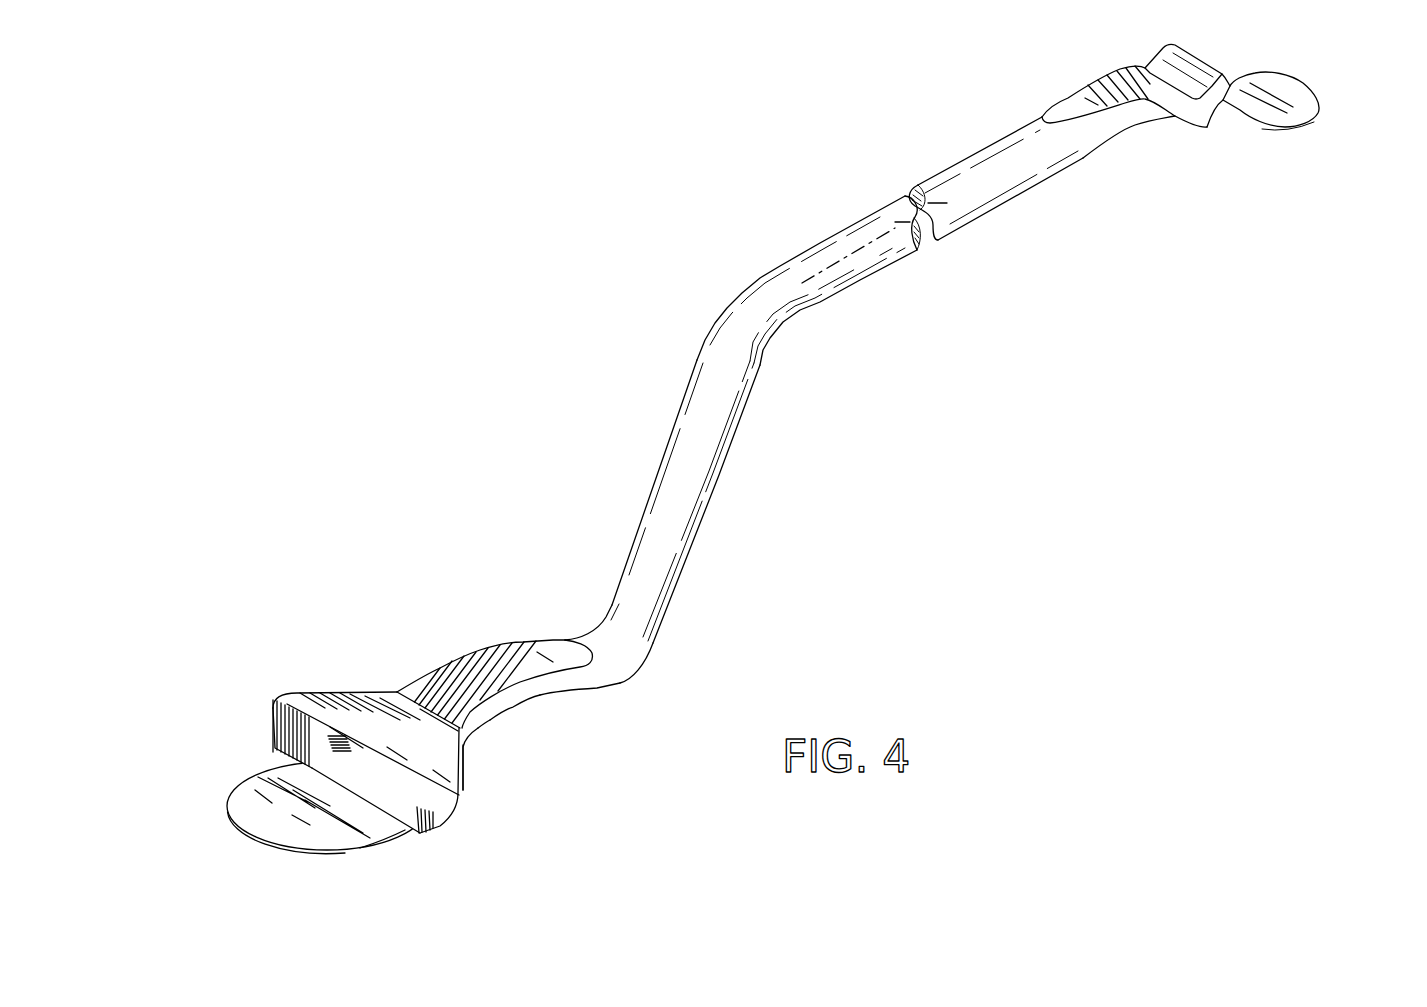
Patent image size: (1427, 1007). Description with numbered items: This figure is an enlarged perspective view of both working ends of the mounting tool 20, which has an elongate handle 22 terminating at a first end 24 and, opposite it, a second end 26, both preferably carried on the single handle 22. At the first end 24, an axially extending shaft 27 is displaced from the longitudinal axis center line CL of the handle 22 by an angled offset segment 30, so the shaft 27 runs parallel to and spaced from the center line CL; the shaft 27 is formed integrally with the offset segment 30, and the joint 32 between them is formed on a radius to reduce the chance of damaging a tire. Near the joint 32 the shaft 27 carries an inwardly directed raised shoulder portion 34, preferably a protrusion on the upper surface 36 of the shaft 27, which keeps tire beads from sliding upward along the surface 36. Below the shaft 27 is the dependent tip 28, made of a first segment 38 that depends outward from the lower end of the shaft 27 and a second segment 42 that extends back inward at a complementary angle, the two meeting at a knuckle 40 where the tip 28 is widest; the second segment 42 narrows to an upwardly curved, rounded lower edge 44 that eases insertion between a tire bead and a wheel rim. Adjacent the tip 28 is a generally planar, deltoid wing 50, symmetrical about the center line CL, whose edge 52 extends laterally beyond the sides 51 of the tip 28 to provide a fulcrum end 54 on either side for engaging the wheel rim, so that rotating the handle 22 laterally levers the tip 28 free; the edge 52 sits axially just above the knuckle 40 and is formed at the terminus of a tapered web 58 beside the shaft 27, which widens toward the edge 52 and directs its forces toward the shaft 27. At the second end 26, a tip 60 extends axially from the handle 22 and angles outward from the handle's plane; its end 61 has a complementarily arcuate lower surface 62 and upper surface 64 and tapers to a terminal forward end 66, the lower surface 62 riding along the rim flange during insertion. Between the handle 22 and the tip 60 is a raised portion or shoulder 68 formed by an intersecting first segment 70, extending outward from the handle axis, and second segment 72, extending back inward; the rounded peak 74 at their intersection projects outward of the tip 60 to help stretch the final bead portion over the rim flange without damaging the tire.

The mounting tool 20 is at (685, 200).
The elongate handle 22 is at (849, 224).
The first end 24 is at (368, 608).
The second end 26 is at (1204, 195).
The shaft 27 is at (478, 643).
The tip 28 is at (216, 808).
The offset segment 30 is at (698, 475).
The joint 32 is at (646, 664).
The raised shoulder portion 34 is at (583, 690).
The upper surface 36 is at (540, 700).
The first segment 38 is at (473, 757).
The knuckle 40 is at (377, 840).
The second segment 42 is at (320, 835).
The lower edge 44 is at (247, 833).
The wing 50 is at (318, 681).
The sides 51 is at (410, 682).
The edge 52 is at (293, 745).
The fulcrum end 54 is at (273, 728).
The tapered web 58 is at (373, 720).
The tip 60 is at (1316, 135).
The end 61 is at (1286, 129).
The lower surface 62 is at (1264, 96).
The upper surface 64 is at (1272, 128).
The terminal forward end 66 is at (1310, 87).
The raised portion 68 is at (1192, 142).
The first segment 70 is at (1180, 113).
The second segment 72 is at (1220, 104).
The peak 74 is at (1210, 104).
The center line CL is at (798, 284).